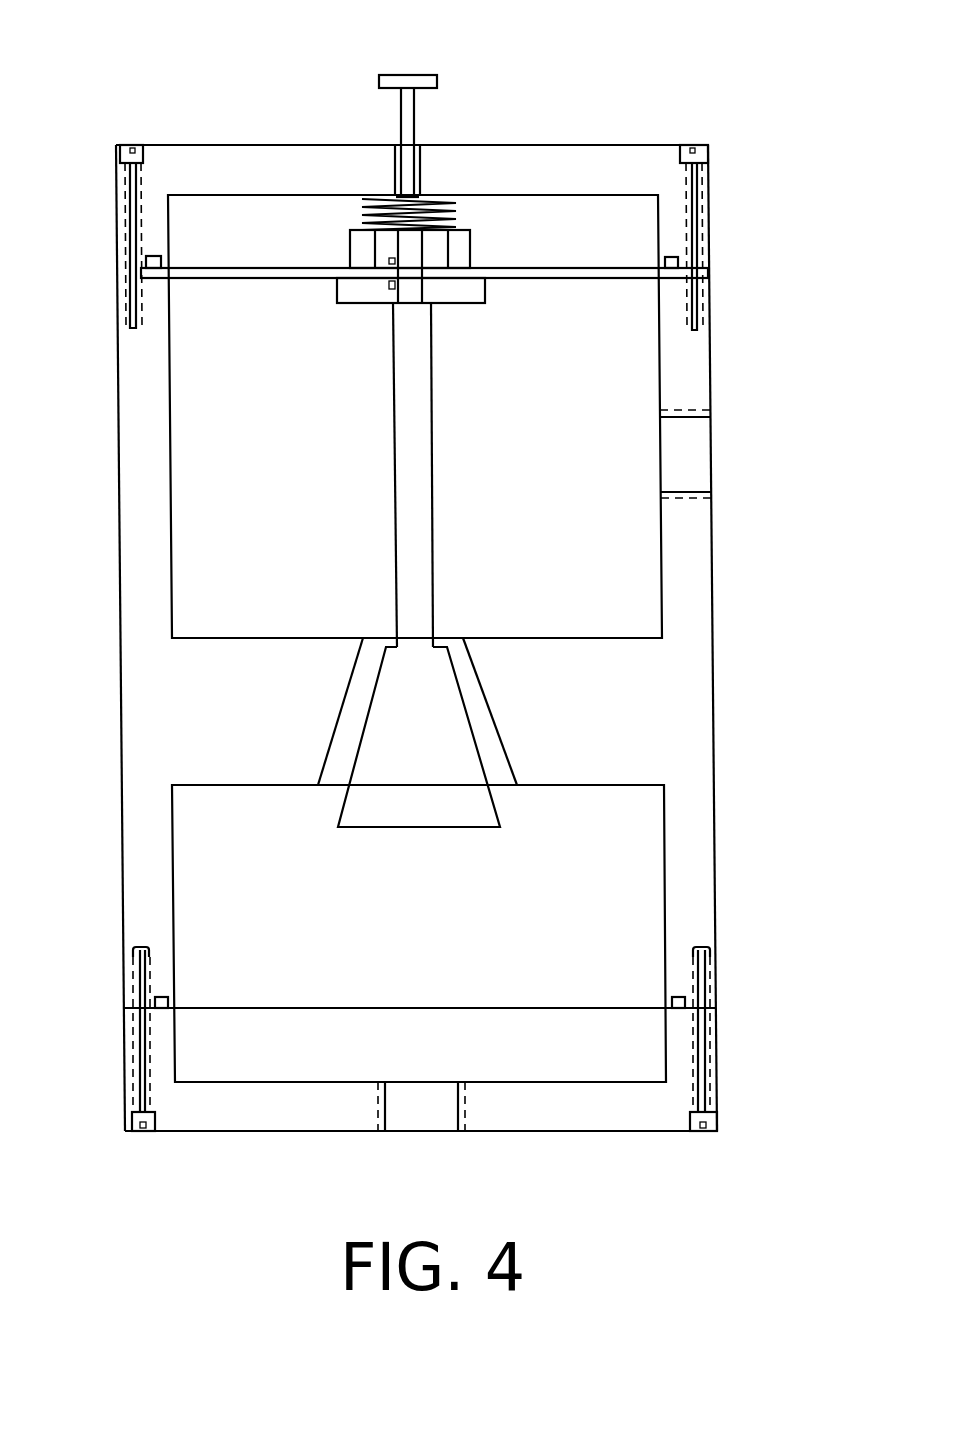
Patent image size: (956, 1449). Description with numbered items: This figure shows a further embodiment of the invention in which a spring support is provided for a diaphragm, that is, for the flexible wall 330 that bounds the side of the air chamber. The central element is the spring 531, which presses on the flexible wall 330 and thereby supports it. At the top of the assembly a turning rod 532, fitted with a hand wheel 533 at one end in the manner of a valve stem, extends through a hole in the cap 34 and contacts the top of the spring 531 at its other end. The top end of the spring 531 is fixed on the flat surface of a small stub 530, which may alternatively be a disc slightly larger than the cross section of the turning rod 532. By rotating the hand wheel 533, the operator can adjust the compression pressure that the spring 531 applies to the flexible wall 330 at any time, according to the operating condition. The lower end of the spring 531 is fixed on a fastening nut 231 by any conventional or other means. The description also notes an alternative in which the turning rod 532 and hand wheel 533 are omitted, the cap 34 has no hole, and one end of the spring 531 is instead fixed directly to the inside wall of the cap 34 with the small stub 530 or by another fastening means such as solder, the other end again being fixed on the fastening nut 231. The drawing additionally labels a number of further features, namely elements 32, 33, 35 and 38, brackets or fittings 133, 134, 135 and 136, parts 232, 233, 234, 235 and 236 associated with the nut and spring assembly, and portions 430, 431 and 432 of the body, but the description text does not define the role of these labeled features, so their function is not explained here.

The right side wall 32 is at (695, 692).
The connecting portion 33 is at (697, 458).
The cap 34 is at (608, 162).
The left side wall 35 is at (235, 712).
The outlet tube 38 is at (418, 1118).
The right support bracket 133 is at (675, 262).
The right upper pivot bracket 134 is at (703, 155).
The left upper pivot bracket 135 is at (134, 148).
The left support bracket 136 is at (146, 260).
The fastening nut 231 is at (465, 253).
The upper pin hole 232 is at (390, 262).
The lower guide block 233 is at (390, 284).
The lower pin hole 234 is at (390, 290).
The shaft 235 is at (393, 495).
The conical member 236 is at (343, 805).
The flexible wall 330 is at (523, 282).
The lower block 430 is at (645, 858).
The upper block 431 is at (635, 548).
The upper block top portion 432 is at (640, 215).
The small stub 530 is at (402, 195).
The spring 531 is at (372, 195).
The turning rod 532 is at (415, 118).
The hand wheel 533 is at (392, 75).